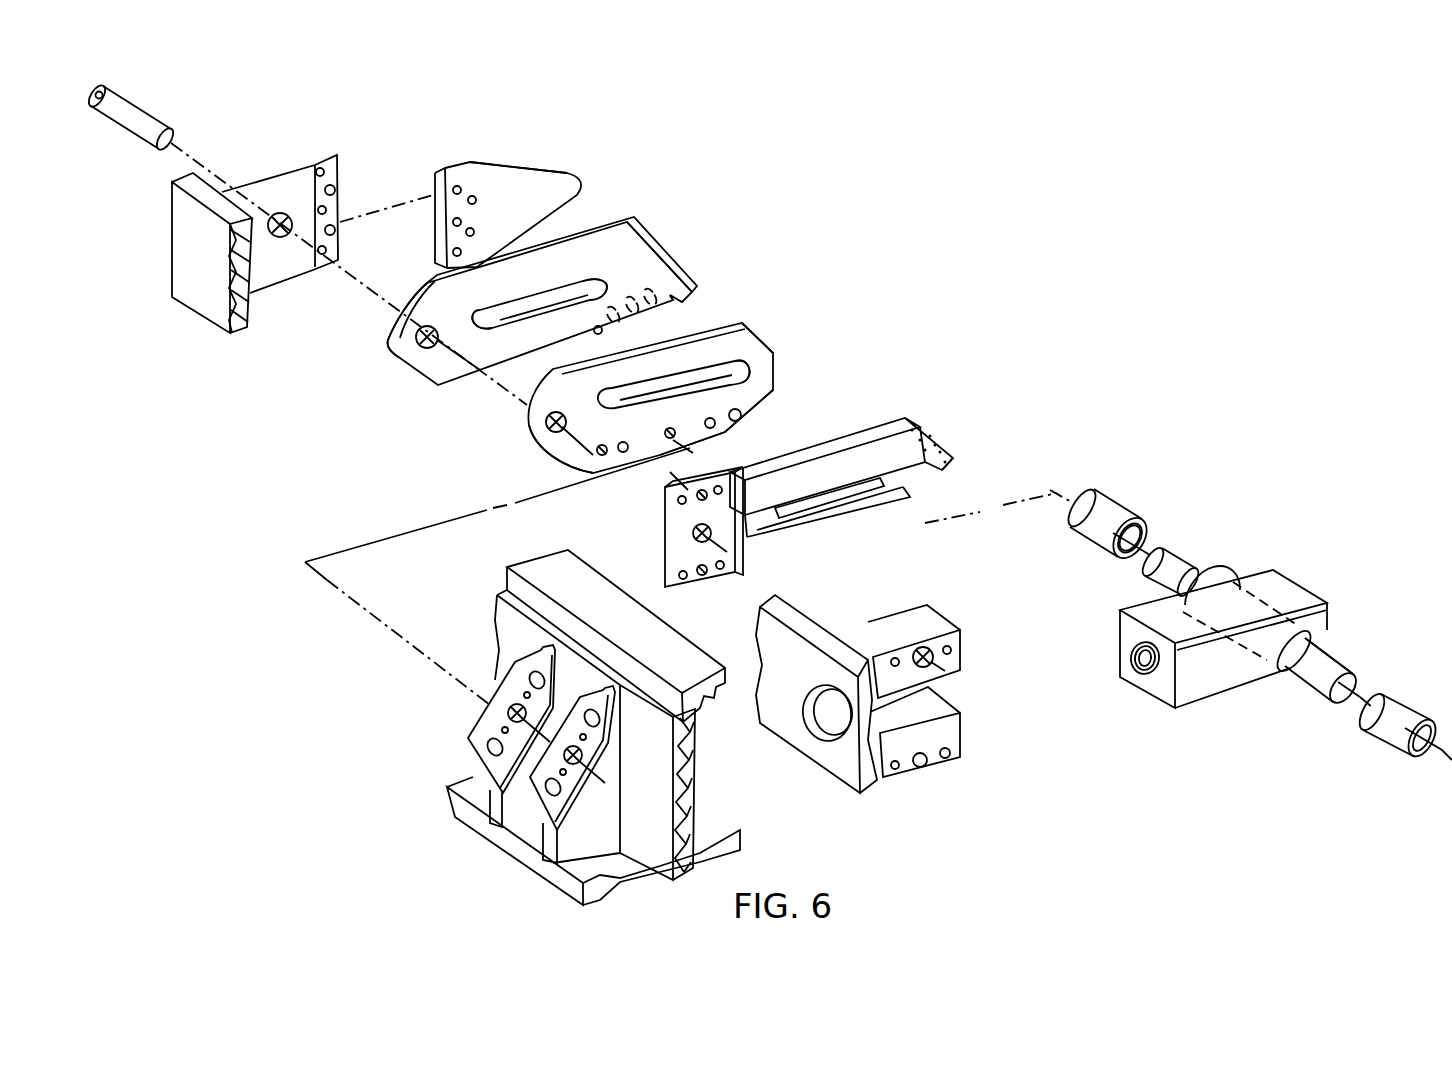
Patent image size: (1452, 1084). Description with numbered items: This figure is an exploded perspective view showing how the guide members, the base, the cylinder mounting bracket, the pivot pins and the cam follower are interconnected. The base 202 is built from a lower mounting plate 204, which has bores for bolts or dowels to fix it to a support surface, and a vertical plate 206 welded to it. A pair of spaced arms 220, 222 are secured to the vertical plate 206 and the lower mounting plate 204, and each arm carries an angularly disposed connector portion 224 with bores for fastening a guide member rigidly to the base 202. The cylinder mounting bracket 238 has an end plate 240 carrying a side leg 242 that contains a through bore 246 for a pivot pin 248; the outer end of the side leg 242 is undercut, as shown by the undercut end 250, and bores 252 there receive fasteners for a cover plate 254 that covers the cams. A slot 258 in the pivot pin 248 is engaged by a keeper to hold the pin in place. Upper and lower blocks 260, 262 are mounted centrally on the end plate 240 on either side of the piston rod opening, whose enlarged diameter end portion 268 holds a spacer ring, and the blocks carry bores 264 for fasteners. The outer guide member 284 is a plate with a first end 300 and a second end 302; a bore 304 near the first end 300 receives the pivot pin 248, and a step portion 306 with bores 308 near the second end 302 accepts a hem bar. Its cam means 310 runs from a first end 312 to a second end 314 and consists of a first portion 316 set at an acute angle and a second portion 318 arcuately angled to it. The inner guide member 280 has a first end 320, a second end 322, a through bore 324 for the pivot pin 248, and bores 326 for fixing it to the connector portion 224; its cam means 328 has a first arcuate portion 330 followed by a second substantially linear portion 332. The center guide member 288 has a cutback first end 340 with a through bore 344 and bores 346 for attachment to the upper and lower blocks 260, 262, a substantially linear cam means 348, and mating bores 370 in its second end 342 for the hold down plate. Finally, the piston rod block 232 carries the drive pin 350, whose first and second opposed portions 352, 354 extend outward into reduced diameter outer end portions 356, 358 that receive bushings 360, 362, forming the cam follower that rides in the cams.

The base 202 is at (742, 638).
The lower mounting plate 204 is at (520, 850).
The vertical plate 206 is at (688, 802).
The arm 220 is at (495, 782).
The arm 222 is at (520, 805).
The connector portion 224 is at (487, 713).
The piston rod block 232 is at (1280, 590).
The cylinder mounting bracket 238 is at (185, 325).
The end plate 240 is at (217, 313).
The side leg 242 is at (268, 273).
The through bore 246 is at (287, 220).
The pivot pin 248 is at (134, 116).
The undercut end 250 is at (345, 157).
The bores 252 is at (333, 225).
The cover plate 254 is at (523, 190).
The slot 258 is at (97, 92).
The upper block 260 is at (933, 617).
The lower block 262 is at (950, 733).
The bores 264 is at (940, 665).
The enlarged diameter end portion 268 is at (804, 713).
The inner guide member 280 is at (780, 350).
The outer guide member 284 is at (648, 231).
The center guide member 288 is at (889, 414).
The first end 300 is at (462, 360).
The second end 302 is at (655, 292).
The bore 304 is at (398, 357).
The step portion 306 is at (662, 308).
The bores 308 is at (645, 322).
The cam means 310 is at (527, 312).
The first end 312 is at (415, 295).
The second end 314 is at (607, 282).
The first portion 316 is at (495, 330).
The second portion 318 is at (575, 292).
The first end 320 is at (535, 412).
The second end 322 is at (752, 408).
The through bore 324 is at (557, 430).
The bores 326 is at (620, 440).
The cam means 328 is at (748, 352).
The first arcuate portion 330 is at (530, 410).
The second substantially linear portion 332 is at (755, 375).
The first end 340 is at (660, 588).
The second end 342 is at (948, 452).
The through bore 344 is at (692, 538).
The bores 346 is at (665, 502).
The cam means 348 is at (832, 500).
The drive pin 350 is at (1347, 647).
The first opposed portion 352 is at (1188, 580).
The second opposed portion 354 is at (1290, 658).
The outer end portion 356 is at (1167, 558).
The outer end portion 358 is at (1317, 700).
The bushing 360 is at (1103, 508).
The bushing 362 is at (1390, 723).
The mating bores 370 is at (918, 436).